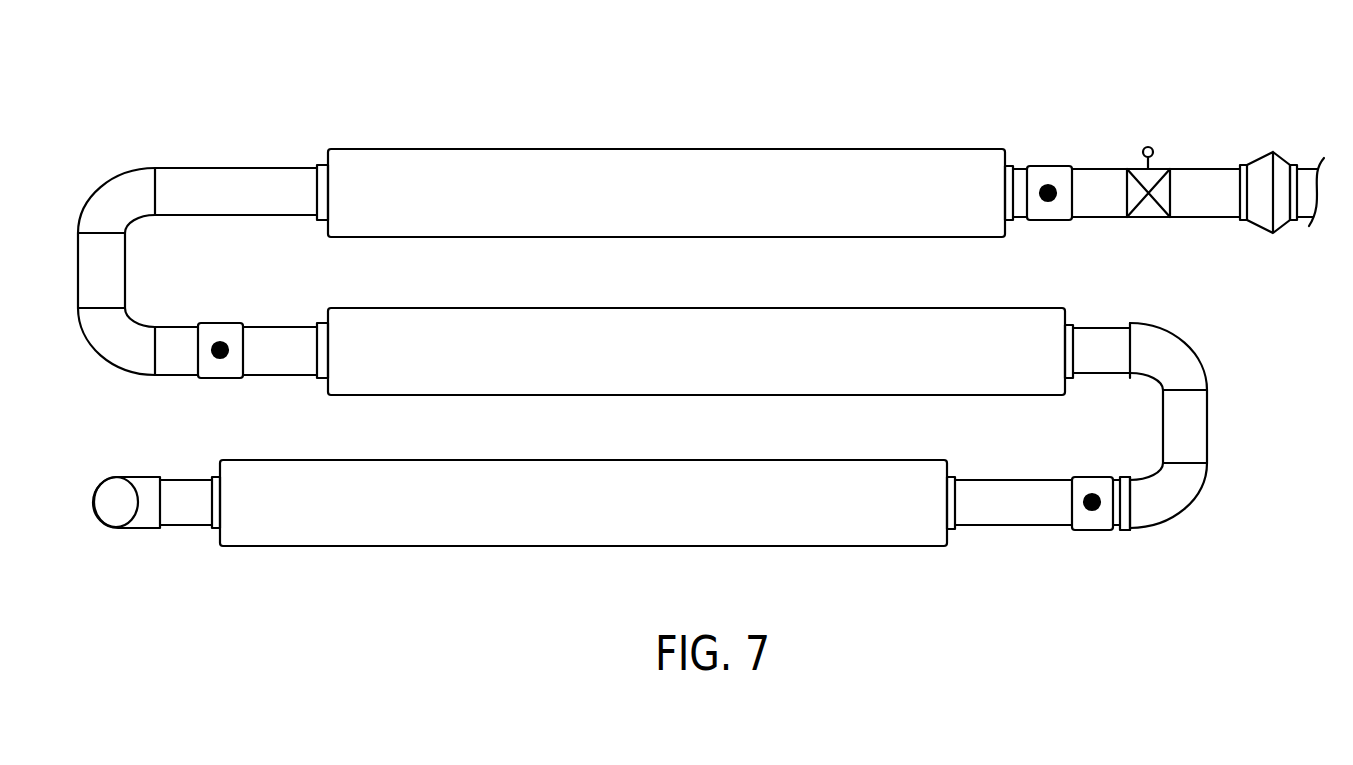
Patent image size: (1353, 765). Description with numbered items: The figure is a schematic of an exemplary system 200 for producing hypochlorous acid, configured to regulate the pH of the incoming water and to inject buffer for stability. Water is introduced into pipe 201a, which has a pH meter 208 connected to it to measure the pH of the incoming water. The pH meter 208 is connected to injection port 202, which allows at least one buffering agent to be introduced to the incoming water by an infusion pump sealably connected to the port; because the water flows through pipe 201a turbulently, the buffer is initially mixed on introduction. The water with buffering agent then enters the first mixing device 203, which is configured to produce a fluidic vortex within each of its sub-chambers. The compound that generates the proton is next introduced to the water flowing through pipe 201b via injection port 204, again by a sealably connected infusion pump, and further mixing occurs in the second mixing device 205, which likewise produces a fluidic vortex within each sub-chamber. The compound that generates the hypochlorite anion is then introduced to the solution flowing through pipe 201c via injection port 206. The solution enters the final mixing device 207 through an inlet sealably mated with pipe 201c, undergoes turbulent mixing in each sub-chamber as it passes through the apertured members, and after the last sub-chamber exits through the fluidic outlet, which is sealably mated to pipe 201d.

The system 200 is at (176, 128).
The pipe 201a is at (1202, 217).
The pipe 201b is at (235, 167).
The pipe 201c is at (1207, 427).
The pipe 201d is at (183, 478).
The injection port 202 is at (1046, 166).
The first mixing device 203 is at (663, 148).
The injection port 204 is at (219, 322).
The second mixing device 205 is at (663, 307).
The injection port 206 is at (1092, 530).
The mixing device 207 is at (583, 460).
The pH meter 208 is at (1147, 146).